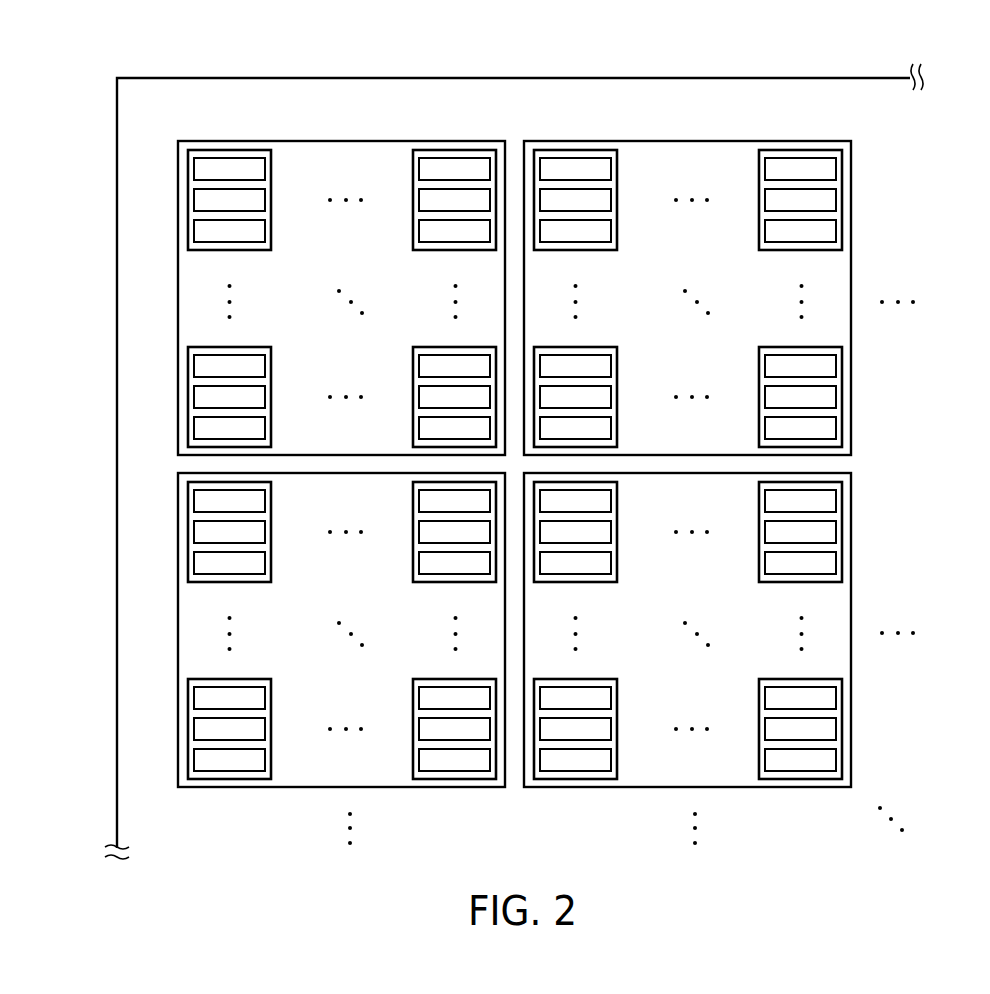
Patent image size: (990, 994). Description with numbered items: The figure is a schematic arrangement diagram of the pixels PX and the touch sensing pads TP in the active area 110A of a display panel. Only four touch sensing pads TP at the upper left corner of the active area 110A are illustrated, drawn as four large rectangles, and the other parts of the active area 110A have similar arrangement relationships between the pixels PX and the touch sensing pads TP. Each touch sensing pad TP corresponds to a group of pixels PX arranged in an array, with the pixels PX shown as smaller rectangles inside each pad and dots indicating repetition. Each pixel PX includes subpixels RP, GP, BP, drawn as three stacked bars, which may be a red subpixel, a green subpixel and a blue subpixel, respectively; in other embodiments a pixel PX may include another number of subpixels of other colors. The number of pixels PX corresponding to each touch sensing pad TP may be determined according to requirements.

The active area 110A is at (597, 102).
The pixel PX is at (803, 157).
The red subpixel RP is at (824, 168).
The green subpixel GP is at (826, 200).
The blue subpixel BP is at (824, 232).
The touch sensing pad TP is at (837, 330).